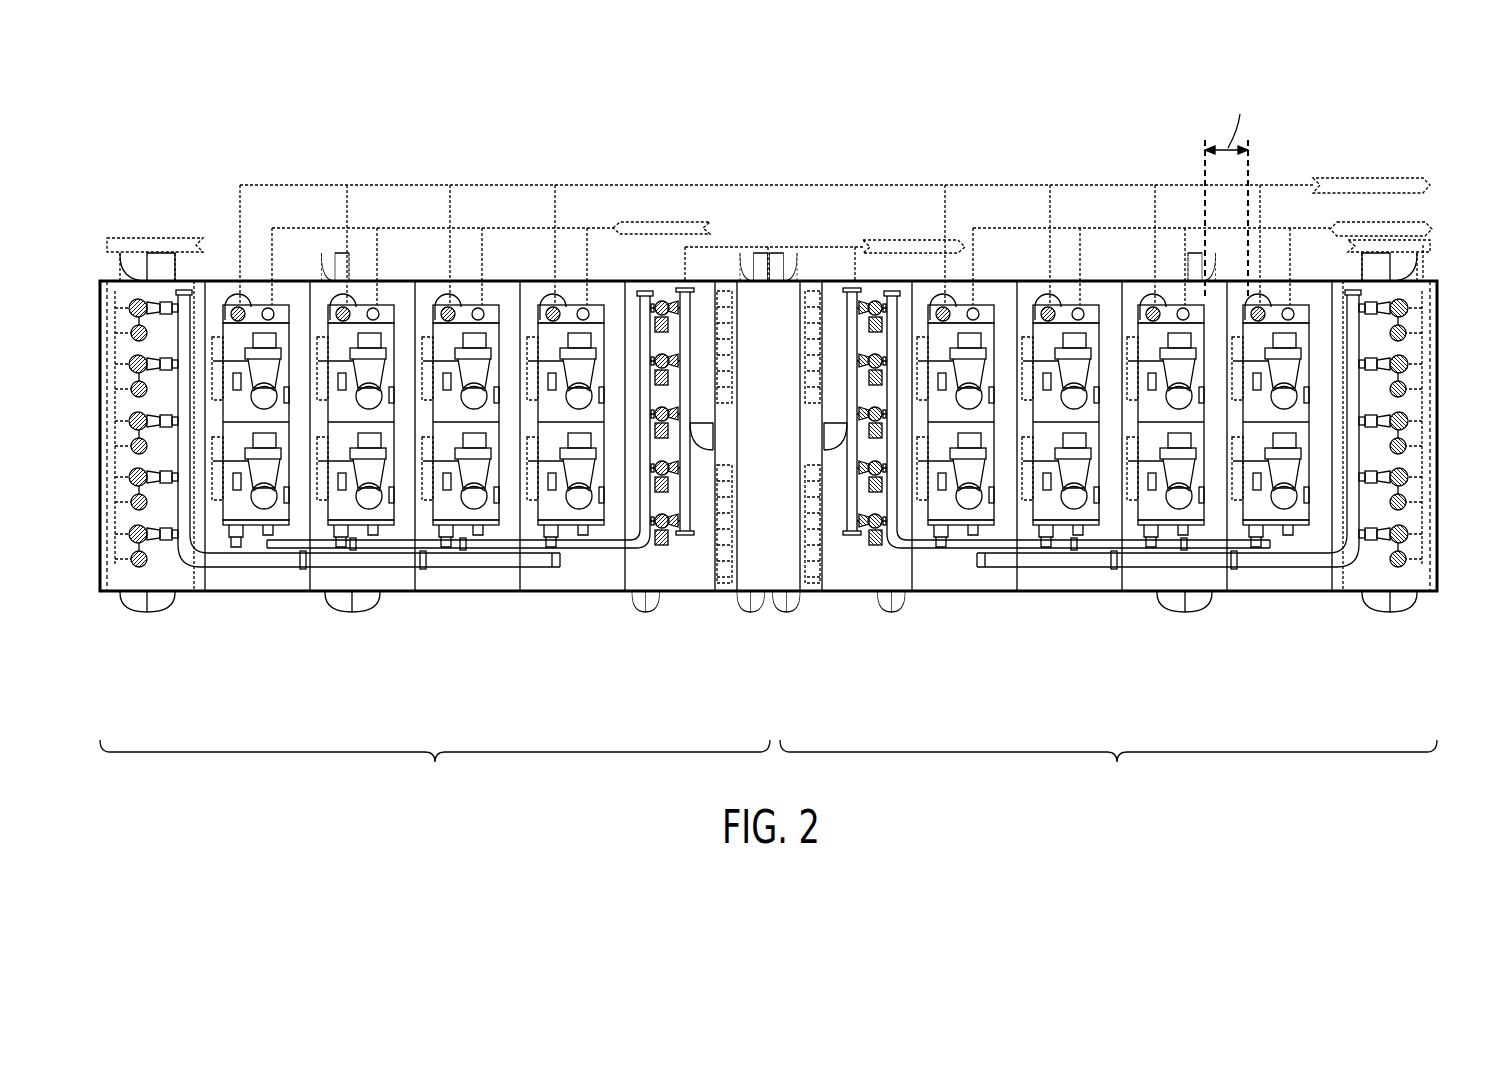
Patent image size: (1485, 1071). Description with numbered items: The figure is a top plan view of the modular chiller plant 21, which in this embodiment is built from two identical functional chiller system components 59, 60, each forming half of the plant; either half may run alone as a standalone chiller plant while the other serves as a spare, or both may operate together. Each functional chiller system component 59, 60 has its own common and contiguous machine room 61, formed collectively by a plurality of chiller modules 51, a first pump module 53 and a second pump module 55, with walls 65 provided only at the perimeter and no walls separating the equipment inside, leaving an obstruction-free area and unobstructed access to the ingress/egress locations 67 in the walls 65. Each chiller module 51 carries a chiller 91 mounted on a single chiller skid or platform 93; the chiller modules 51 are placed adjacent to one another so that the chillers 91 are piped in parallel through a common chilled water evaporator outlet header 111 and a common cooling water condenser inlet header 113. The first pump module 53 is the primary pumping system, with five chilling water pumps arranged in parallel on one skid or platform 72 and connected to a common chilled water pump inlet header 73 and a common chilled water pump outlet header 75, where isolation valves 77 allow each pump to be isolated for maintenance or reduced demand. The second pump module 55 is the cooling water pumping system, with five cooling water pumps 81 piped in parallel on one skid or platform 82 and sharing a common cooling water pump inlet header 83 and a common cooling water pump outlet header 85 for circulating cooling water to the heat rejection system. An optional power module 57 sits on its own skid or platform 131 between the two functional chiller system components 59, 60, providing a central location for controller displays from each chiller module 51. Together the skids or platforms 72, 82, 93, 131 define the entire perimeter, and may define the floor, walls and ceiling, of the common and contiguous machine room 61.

The modular chiller plant 21 is at (905, 130).
The chiller module 51 is at (294, 593).
The first pump module 53 is at (680, 593).
The second pump module 55 is at (104, 592).
The power module 57 is at (790, 283).
The functional chiller system component 59 is at (435, 768).
The functional chiller system component 60 is at (1108, 768).
The common and contiguous machine room 61 is at (495, 664).
The walls 65 is at (300, 283).
The ingress/egress locations 67 is at (150, 320).
The skid or platform 72 is at (632, 593).
The common chilled water pump inlet header 73 is at (642, 300).
The common chilled water pump outlet header 75 is at (695, 305).
The isolation valves 77 is at (685, 300).
The cooling water pumps 81 is at (160, 310).
The skid or platform 82 is at (186, 588).
The common cooling water pump inlet header 83 is at (116, 300).
The common cooling water pump outlet header 85 is at (184, 330).
The chiller 91 is at (224, 330).
The chiller skid or platform 93 is at (220, 593).
The common chilled water evaporator outlet header 111 is at (556, 576).
The common cooling water condenser inlet header 113 is at (396, 567).
The skid or platform 131 is at (746, 593).